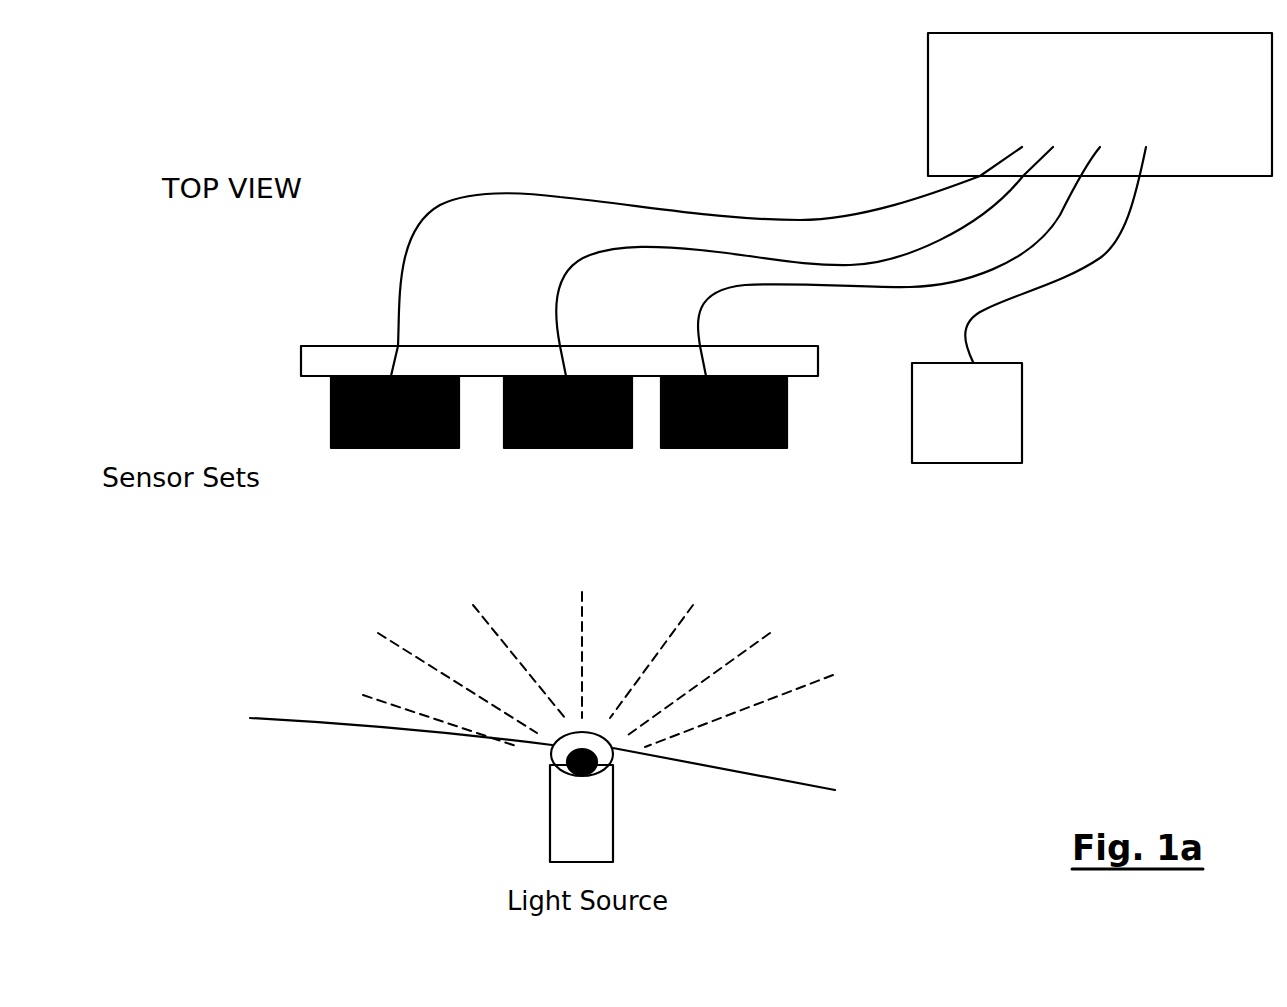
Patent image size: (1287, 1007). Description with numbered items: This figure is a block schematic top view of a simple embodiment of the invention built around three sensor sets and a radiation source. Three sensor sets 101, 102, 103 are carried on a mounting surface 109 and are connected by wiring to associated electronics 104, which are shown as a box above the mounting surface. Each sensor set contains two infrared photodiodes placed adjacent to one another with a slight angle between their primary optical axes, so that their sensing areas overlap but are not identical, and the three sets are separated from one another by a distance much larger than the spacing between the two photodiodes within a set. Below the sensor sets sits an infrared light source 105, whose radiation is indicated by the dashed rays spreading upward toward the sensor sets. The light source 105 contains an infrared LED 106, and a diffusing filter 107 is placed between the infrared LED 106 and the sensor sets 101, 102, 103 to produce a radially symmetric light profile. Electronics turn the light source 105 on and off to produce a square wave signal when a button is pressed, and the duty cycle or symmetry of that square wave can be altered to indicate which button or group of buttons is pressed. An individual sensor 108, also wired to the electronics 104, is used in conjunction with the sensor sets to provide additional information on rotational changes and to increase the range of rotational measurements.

The sensor set 101 is at (380, 460).
The sensor set 102 is at (550, 460).
The sensor set 103 is at (708, 462).
The electronics 104 is at (912, 89).
The infrared light source 105 is at (536, 812).
The infrared LED 106 is at (372, 723).
The diffusing filter 107 is at (751, 786).
The individual sensor 108 is at (958, 477).
The mounting surface 109 is at (302, 360).